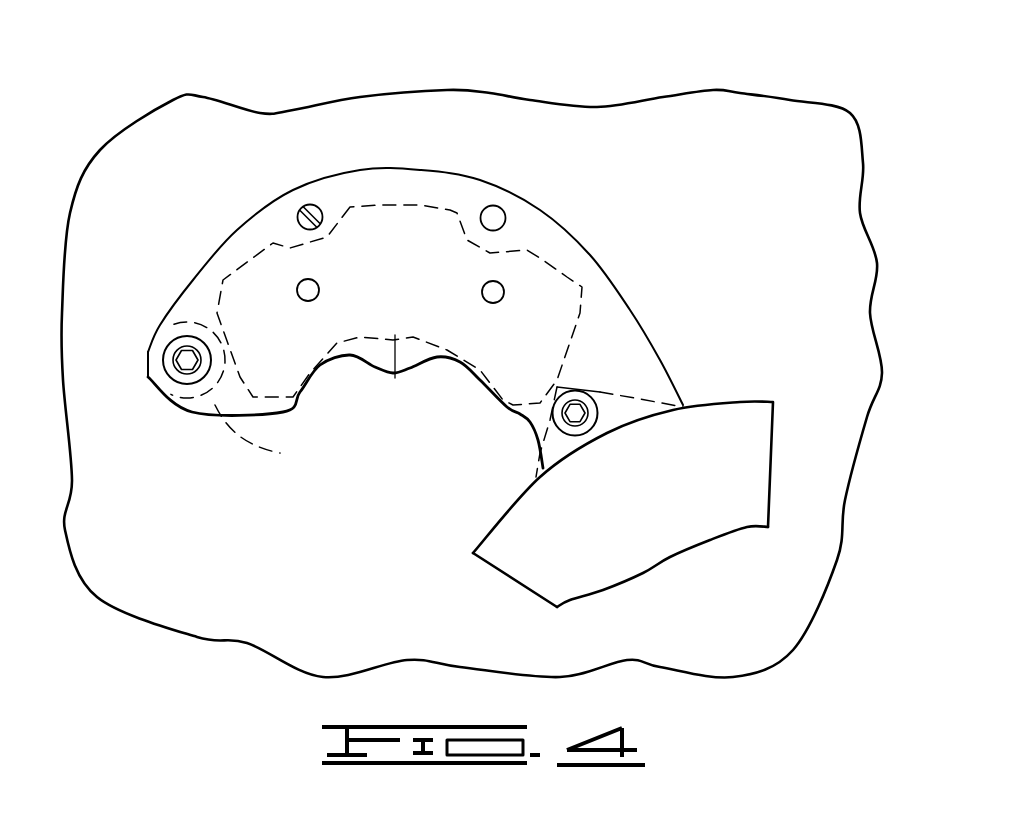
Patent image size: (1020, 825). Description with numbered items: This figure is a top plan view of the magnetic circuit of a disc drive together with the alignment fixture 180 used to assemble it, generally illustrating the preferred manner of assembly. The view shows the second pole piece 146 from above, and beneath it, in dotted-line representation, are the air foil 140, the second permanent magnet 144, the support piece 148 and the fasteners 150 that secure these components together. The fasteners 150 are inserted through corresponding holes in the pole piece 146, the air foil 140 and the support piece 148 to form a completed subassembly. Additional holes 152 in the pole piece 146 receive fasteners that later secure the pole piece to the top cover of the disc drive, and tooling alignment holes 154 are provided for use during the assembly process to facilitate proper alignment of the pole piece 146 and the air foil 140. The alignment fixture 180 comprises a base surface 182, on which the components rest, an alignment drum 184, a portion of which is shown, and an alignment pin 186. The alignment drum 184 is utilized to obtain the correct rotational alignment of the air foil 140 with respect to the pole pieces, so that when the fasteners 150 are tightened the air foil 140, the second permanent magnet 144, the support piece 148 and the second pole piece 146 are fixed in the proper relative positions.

The alignment fixture 180 is at (260, 70).
The base surface 182 is at (133, 483).
The alignment drum 184 is at (527, 557).
The alignment pin 186 is at (305, 208).
The tooling alignment holes 154 is at (313, 204).
The fasteners 150 is at (188, 336).
The holes 152 is at (482, 288).
The second pole piece 146 is at (598, 283).
The air foil 140 is at (650, 385).
The second permanent magnet 144 is at (398, 388).
The support piece 148 is at (246, 395).